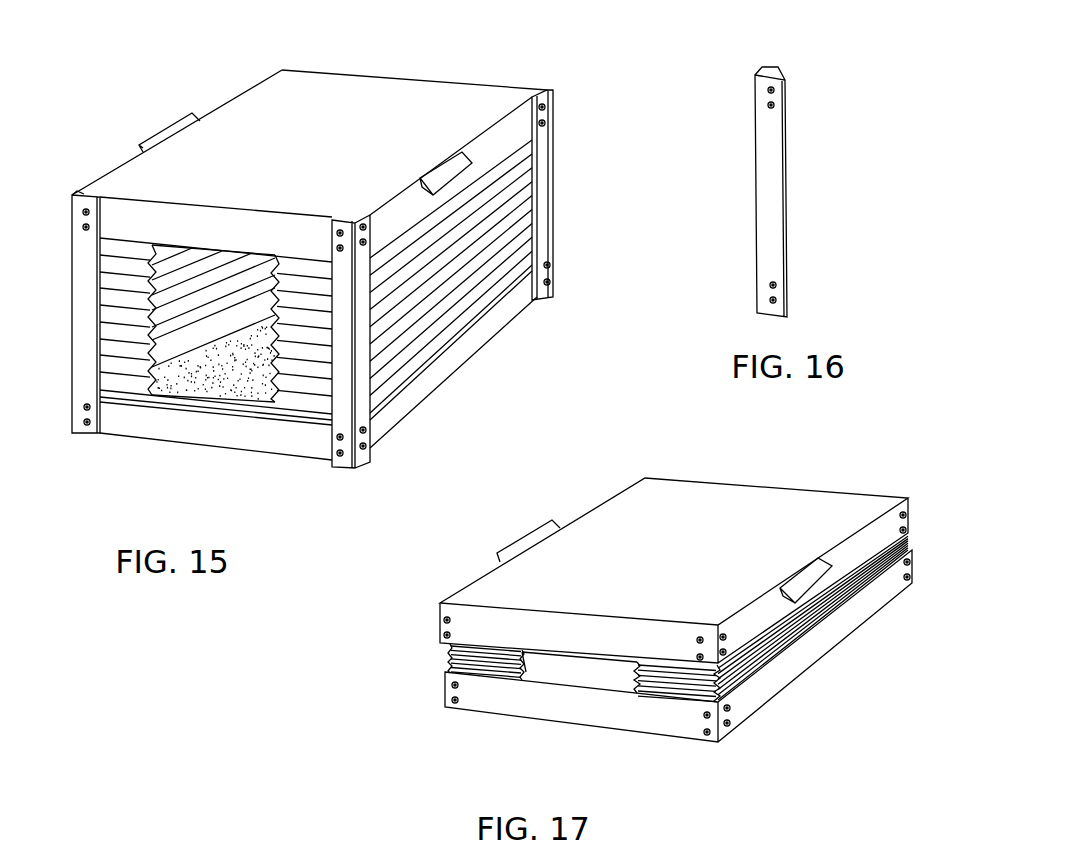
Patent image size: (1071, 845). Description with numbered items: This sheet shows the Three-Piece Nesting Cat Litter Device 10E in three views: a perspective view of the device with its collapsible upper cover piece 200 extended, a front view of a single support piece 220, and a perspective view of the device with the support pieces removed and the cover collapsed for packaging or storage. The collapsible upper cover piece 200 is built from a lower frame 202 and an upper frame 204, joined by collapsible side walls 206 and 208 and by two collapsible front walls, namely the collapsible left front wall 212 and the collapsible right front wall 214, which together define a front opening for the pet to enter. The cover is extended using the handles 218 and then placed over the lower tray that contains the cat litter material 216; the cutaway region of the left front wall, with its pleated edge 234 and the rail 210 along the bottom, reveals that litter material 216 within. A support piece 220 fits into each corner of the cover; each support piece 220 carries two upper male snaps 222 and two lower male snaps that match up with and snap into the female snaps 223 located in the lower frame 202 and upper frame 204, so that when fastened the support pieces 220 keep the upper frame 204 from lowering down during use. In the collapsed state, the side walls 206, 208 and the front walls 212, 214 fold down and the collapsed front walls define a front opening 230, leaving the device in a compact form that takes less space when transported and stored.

In FIG. 15, the Three-Piece Nesting Cat Litter Device 10E is at (166, 78).
In FIG. 15, the collapsible upper cover piece 200 is at (326, 60).
In FIG. 15, the lower frame 202 is at (493, 338).
In FIG. 17, the lower frame 202 is at (755, 685).
In FIG. 15, the upper frame 204 is at (467, 107).
In FIG. 15, the collapsible side wall 206 is at (458, 290).
In FIG. 17, the collapsible side wall 206 is at (800, 623).
In FIG. 15, the collapsible side wall 208 is at (178, 277).
In FIG. 15, the bottom rail 210 is at (230, 438).
In FIG. 15, the collapsible left front wall 212 is at (120, 372).
In FIG. 17, the collapsible left front wall 212 is at (503, 665).
In FIG. 15, the collapsible right front wall 214 is at (315, 370).
In FIG. 17, the collapsible right front wall 214 is at (663, 690).
In FIG. 15, the cat litter material 216 is at (253, 378).
In FIG. 15, the handle 218 is at (168, 130).
In FIG. 17, the handle 218 is at (540, 530).
In FIG. 15, the support piece 220 is at (363, 322).
In FIG. 16, the support piece 220 is at (768, 167).
In FIG. 15, the upper male snap 222 is at (548, 124).
In FIG. 16, the upper male snap 222 is at (780, 106).
In FIG. 17, the female snap 223 is at (443, 635).
In FIG. 15, the front opening 230 is at (187, 393).
In FIG. 17, the front opening 230 is at (582, 675).
In FIG. 15, the pleat fold 234 is at (167, 352).